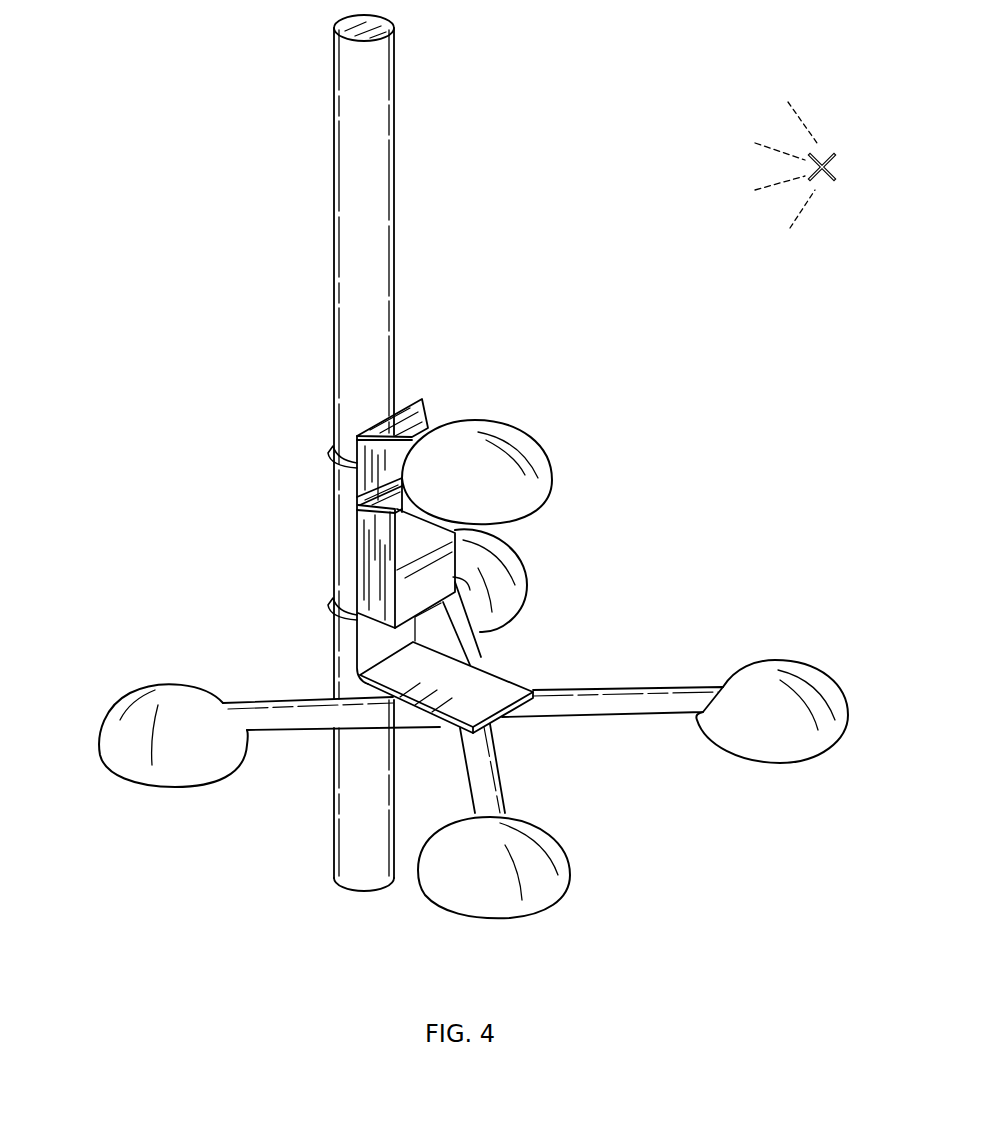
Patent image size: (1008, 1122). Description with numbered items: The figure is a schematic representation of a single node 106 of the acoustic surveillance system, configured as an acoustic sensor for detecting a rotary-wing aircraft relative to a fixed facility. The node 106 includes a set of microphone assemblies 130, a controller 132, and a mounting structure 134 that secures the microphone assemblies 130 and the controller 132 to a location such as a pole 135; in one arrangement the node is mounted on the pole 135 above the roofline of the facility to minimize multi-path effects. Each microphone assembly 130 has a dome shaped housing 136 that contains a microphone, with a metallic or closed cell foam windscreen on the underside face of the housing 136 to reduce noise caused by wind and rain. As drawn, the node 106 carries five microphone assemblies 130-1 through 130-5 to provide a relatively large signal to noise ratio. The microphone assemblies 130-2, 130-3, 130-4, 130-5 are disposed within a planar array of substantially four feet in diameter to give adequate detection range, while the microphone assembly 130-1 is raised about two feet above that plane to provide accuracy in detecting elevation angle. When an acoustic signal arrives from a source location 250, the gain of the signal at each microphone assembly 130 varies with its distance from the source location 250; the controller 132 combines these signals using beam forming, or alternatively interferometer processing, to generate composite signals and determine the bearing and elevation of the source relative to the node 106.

The node 106 is at (720, 345).
The microphone assembly 130 is at (533, 342).
The first microphone assembly 130-1 is at (517, 451).
The second microphone assembly 130-2 is at (540, 589).
The third microphone assembly 130-3 is at (761, 770).
The fourth microphone assembly 130-4 is at (535, 928).
The fifth microphone assembly 130-5 is at (165, 800).
The controller 132 is at (372, 557).
The mounting structure 134 is at (500, 690).
The pole 135 is at (382, 190).
The housing 136 is at (535, 497).
The source location 250 is at (832, 152).